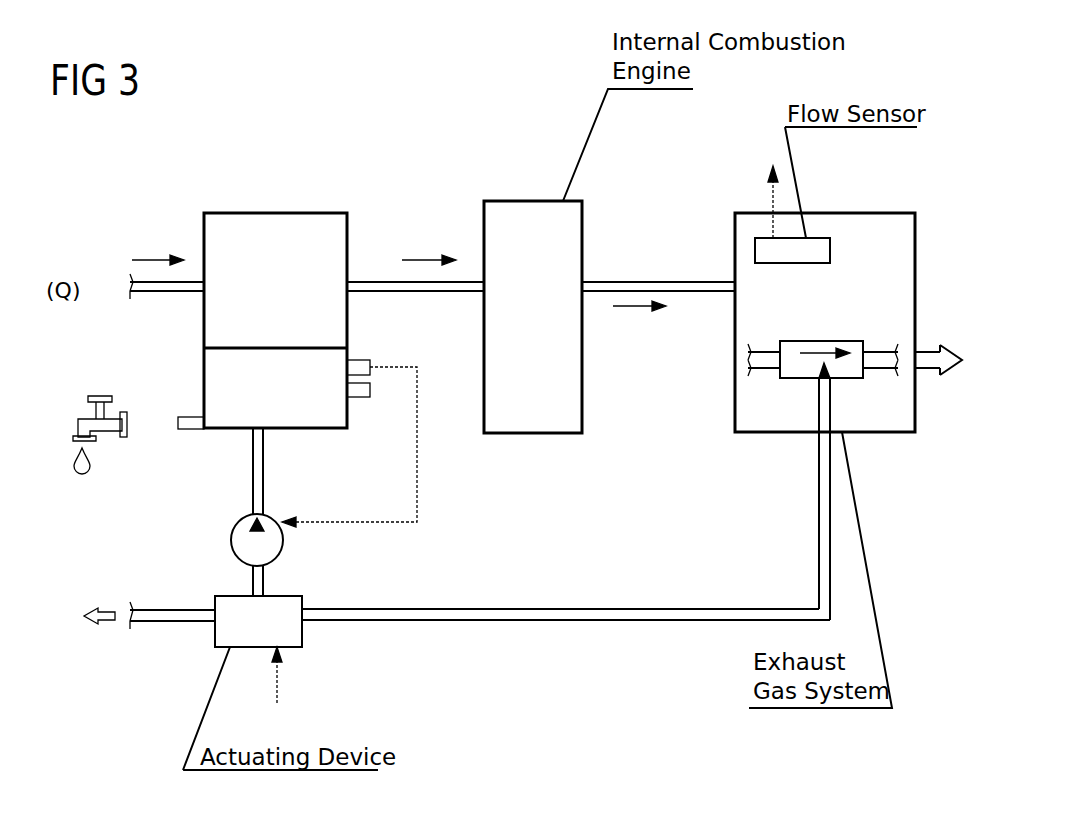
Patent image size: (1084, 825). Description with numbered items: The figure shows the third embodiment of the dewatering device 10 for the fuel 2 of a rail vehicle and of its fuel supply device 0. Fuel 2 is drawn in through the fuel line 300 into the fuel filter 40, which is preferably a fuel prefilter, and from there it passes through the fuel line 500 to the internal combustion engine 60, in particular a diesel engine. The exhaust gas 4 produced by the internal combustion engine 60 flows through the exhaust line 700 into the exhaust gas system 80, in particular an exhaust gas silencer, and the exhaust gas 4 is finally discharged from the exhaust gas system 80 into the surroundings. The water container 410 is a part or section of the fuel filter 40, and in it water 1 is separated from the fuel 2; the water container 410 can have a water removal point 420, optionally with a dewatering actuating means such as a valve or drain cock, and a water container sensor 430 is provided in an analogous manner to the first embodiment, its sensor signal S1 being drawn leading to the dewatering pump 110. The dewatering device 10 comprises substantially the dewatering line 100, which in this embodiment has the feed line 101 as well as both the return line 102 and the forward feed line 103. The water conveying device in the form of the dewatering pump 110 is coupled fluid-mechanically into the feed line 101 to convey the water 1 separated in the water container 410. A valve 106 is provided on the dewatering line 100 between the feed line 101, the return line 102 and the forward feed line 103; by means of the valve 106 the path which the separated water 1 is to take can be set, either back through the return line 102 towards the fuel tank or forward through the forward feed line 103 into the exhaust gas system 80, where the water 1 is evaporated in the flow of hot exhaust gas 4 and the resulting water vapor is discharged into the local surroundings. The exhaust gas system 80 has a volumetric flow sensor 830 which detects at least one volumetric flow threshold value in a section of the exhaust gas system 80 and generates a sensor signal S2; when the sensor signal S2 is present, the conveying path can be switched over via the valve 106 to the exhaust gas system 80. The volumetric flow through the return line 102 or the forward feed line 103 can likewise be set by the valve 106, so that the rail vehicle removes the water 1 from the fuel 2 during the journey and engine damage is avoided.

The fuel supply device 0 is at (470, 128).
The water 1 is at (182, 420).
The fuel 2 is at (212, 243).
The exhaust gas 4 is at (700, 282).
The dewatering device 10 is at (542, 660).
The fuel filter 40 is at (276, 213).
The internal combustion engine 60 is at (533, 201).
The exhaust gas system 80 is at (826, 213).
The dewatering line 100 is at (382, 638).
The feed line 101 is at (263, 485).
The return line 102 is at (182, 608).
The forward feed line 103 is at (694, 621).
The valve 106 is at (255, 645).
The dewatering pump 110 is at (283, 540).
The fuel line 300 is at (200, 292).
The water container 410 is at (204, 377).
The water removal point 420 is at (100, 440).
The water container sensor 430 is at (357, 360).
The fuel line 500 is at (428, 296).
The exhaust gas line 700 is at (630, 282).
The volumetric flow sensor 830 is at (825, 252).
The sensor signal S1 is at (420, 470).
The sensor signal S2 is at (768, 200).